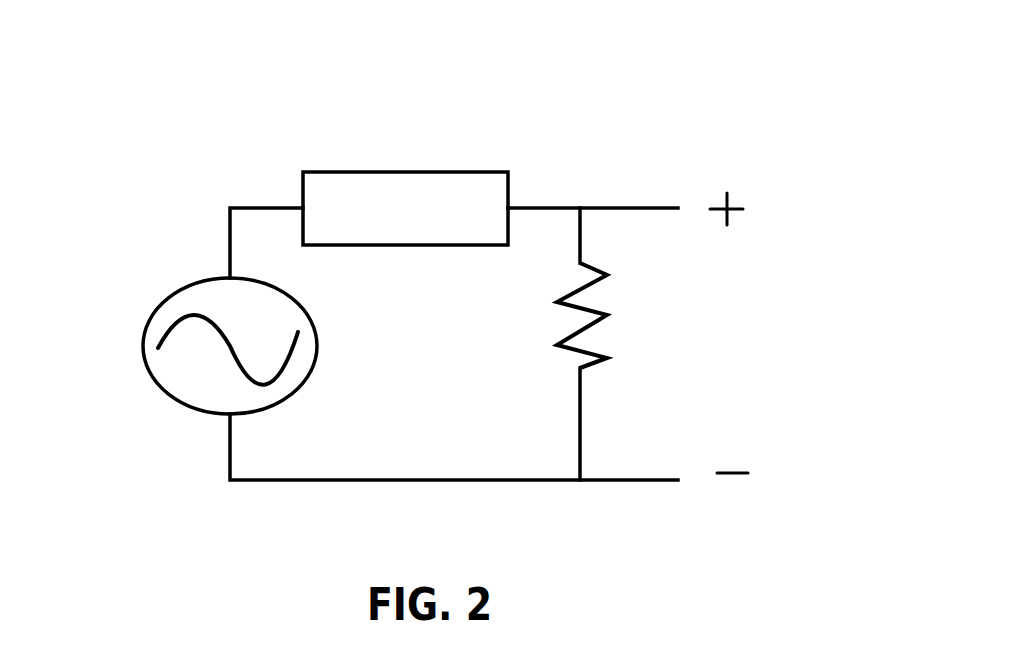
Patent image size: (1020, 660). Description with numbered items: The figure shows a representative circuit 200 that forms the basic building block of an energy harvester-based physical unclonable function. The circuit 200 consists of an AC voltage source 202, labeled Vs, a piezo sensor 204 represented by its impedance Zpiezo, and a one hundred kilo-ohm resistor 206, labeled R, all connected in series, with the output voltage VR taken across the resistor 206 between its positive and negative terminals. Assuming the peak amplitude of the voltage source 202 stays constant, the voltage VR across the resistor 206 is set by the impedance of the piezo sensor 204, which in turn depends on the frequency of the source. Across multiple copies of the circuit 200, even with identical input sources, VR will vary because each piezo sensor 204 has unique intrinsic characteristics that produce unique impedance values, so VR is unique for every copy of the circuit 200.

The circuit 200 is at (445, 254).
The AC voltage source 202 is at (188, 287).
The piezo sensor 204 is at (503, 171).
The resistor 206 is at (595, 268).